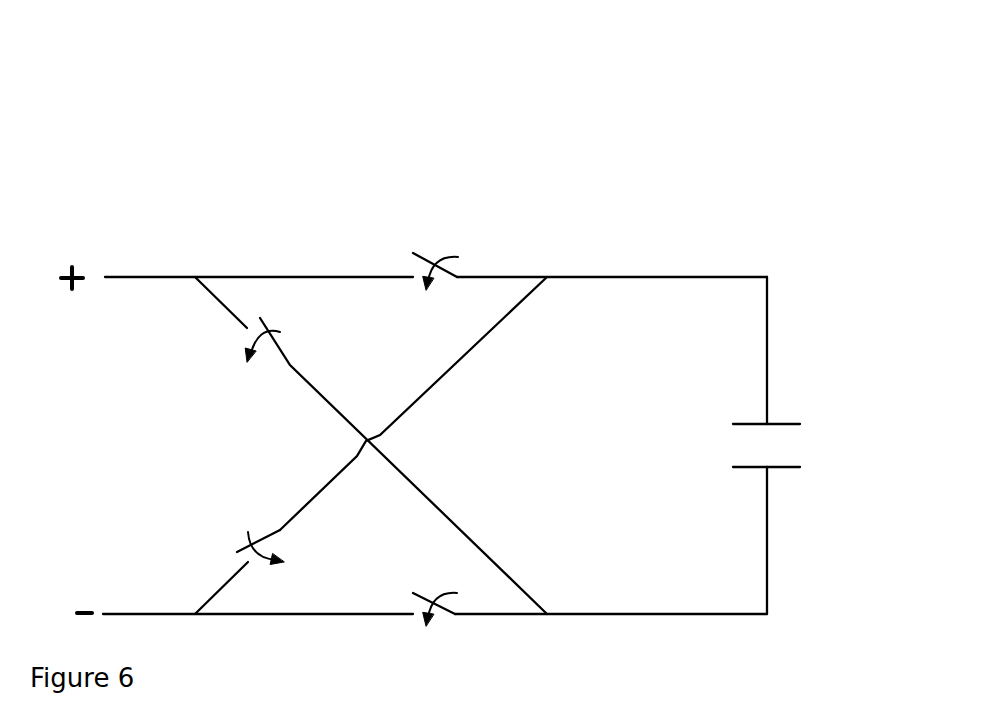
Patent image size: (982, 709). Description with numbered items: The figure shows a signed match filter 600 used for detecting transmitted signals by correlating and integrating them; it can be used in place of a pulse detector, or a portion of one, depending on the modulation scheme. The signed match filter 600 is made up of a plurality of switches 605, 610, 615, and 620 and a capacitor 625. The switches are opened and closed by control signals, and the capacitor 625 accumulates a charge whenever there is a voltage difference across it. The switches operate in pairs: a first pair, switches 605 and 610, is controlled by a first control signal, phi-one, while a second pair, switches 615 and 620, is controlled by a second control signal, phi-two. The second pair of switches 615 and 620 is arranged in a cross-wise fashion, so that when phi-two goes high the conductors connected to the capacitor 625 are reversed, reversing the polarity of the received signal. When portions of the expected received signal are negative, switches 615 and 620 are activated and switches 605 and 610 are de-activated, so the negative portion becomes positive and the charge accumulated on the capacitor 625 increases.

The signed match filter 600 is at (772, 122).
The switch 605 is at (412, 252).
The switch 610 is at (425, 590).
The switch 615 is at (262, 318).
The switch 620 is at (232, 547).
The capacitor 625 is at (743, 418).